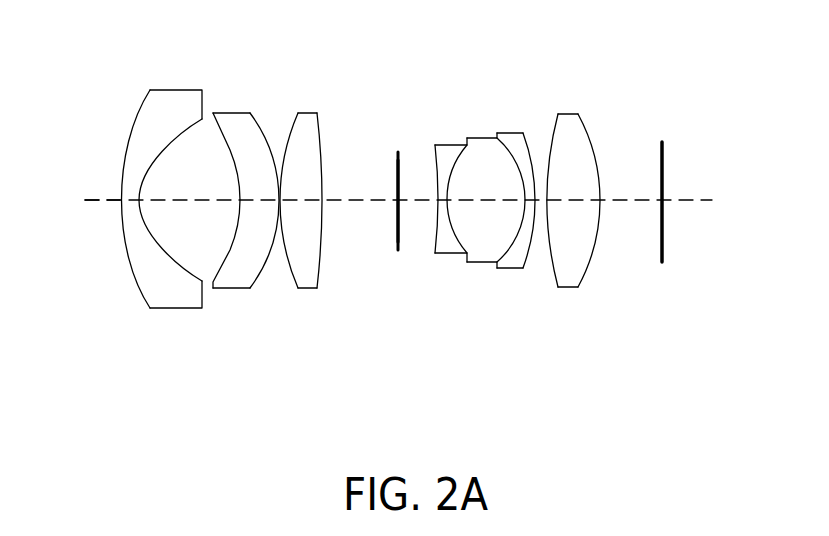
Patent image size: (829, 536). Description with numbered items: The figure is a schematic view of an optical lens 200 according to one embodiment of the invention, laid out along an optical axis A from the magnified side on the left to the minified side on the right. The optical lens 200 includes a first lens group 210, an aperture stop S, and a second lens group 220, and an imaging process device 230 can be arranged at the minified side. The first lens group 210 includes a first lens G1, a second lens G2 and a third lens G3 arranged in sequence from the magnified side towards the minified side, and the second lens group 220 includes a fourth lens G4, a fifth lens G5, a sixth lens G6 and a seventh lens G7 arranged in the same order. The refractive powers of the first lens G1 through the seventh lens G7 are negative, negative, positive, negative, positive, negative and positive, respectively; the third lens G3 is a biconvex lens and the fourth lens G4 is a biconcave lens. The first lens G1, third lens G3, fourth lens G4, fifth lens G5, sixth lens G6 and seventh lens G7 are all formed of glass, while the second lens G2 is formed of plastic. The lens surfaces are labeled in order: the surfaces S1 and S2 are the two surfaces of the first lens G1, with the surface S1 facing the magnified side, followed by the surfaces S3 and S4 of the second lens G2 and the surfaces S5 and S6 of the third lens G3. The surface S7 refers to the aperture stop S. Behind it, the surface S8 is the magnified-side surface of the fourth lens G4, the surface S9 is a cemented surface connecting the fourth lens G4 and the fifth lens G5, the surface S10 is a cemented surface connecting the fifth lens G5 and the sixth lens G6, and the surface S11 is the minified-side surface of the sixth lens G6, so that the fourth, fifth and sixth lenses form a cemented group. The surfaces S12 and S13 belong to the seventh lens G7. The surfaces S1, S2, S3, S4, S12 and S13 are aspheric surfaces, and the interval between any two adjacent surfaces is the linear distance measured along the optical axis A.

The optical lens 200 is at (402, 224).
The first lens group 210 is at (234, 222).
The second lens group 220 is at (517, 218).
The imaging process device 230 is at (664, 249).
The optical axis A is at (97, 200).
The aperture stop S is at (397, 188).
The first lens G1 is at (162, 204).
The second lens G2 is at (245, 204).
The third lens G3 is at (312, 204).
The fourth lens G4 is at (437, 202).
The fifth lens G5 is at (496, 198).
The sixth lens G6 is at (517, 217).
The seventh lens G7 is at (583, 208).
The surface S1 is at (128, 121).
The surface S2 is at (176, 141).
The surface S3 is at (230, 150).
The surface S4 is at (273, 132).
The surface S5 is at (283, 127).
The surface S6 is at (320, 143).
The surface S7 is at (398, 170).
The surface S8 is at (435, 158).
The cemented surface S9 is at (459, 161).
The cemented surface S10 is at (507, 167).
The surface S11 is at (538, 153).
The surface S12 is at (553, 137).
The surface S13 is at (589, 138).